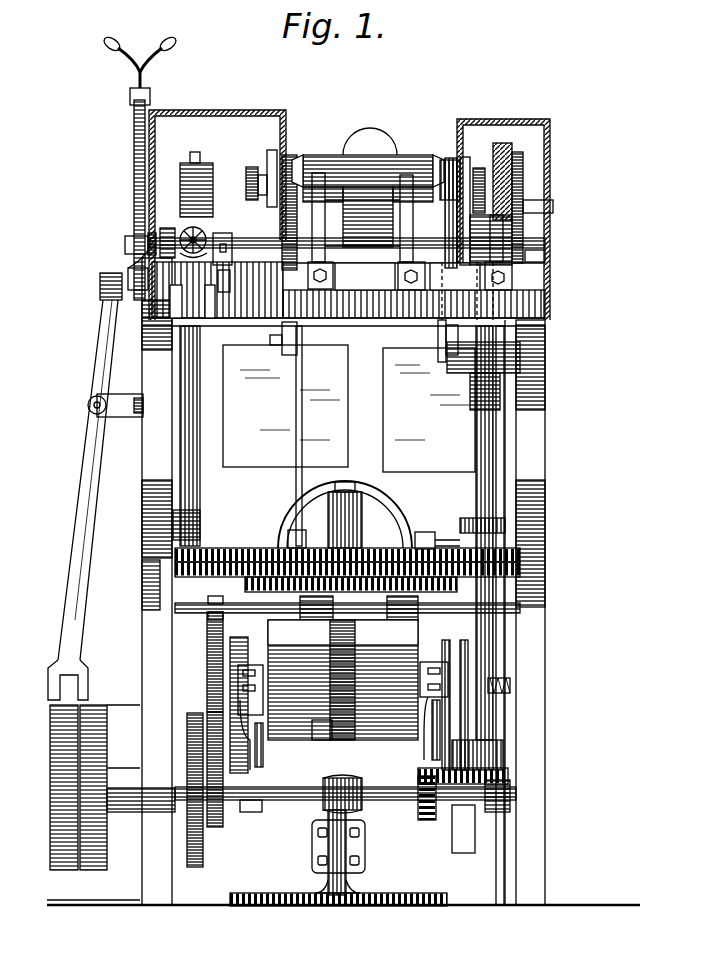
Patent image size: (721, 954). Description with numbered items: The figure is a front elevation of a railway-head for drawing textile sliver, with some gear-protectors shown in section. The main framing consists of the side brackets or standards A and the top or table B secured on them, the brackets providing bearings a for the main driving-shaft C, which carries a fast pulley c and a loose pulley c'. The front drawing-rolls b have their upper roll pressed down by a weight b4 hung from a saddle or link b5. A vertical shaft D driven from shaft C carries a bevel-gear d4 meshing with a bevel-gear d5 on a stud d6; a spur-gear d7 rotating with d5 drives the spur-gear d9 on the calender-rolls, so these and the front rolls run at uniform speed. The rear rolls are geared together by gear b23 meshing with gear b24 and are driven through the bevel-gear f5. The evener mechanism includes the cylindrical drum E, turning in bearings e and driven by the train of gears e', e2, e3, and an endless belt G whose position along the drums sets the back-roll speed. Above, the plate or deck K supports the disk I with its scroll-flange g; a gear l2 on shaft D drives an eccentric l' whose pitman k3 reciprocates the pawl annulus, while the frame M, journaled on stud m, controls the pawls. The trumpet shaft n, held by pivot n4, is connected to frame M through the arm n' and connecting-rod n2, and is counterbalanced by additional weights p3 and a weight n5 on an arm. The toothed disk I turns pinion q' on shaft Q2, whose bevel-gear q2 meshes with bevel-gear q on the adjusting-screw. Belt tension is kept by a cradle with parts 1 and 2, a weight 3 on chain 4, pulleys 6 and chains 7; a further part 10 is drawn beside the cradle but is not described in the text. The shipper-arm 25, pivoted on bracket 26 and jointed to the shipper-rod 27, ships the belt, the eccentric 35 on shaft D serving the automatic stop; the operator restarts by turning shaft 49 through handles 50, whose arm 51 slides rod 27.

The side brackets or standards A is at (156, 468).
The top or table B is at (414, 246).
The main driving-shaft C is at (292, 788).
The vertical shaft D is at (476, 452).
The cylindrical drum E is at (343, 680).
The endless belt G is at (318, 740).
The disk I is at (370, 566).
The plate or deck K is at (263, 548).
The frame M is at (355, 478).
The stud m is at (362, 510).
The bearings a is at (180, 820).
The front drawing-rolls b is at (405, 168).
The fast pulley c is at (80, 787).
The loose pulley c' is at (120, 693).
The bearings e is at (343, 705).
The gear e' is at (208, 791).
The gear-wheel e2 is at (224, 828).
The gear e3 is at (207, 634).
The scroll-flange g is at (248, 588).
The shaft n is at (347, 236).
The arm n' is at (279, 436).
The connecting-rod n2 is at (302, 535).
The pivot or center n4 is at (148, 236).
The weight n5 is at (231, 280).
The bevel-gear q is at (183, 223).
The pinion q' is at (142, 581).
The bevel-gear q2 is at (207, 247).
The shaft Q2 is at (210, 492).
The additional weights p3 is at (213, 180).
The weight b4 is at (349, 408).
The saddle or link b5 is at (297, 222).
The gear b23 is at (246, 170).
The gear b24 is at (270, 170).
The bevel-gear d4 is at (465, 235).
The bevel-gear d5 is at (522, 194).
The stud d6 is at (553, 207).
The spur-gear d7 is at (525, 175).
The spur-gear d9 is at (540, 243).
The bevel-gear f5 is at (503, 165).
The pitman k3 is at (430, 532).
The eccentric l' is at (533, 615).
The gear l2 is at (472, 516).
The cradle arm parts 1 is at (263, 760).
The cradle arm parts 2 is at (262, 812).
The weight 3 is at (462, 853).
The chain 4 is at (490, 678).
The pulleys 6 is at (460, 645).
The chain 7 is at (443, 645).
The bar 10 is at (255, 612).
The shipper-arm 25 is at (98, 370).
The stand or bracket 26 is at (122, 418).
The shipper-rod 27 is at (100, 283).
The eccentric 35 is at (468, 366).
The shaft 49 is at (135, 143).
The handles 50 is at (140, 61).
The arm 51 is at (128, 272).